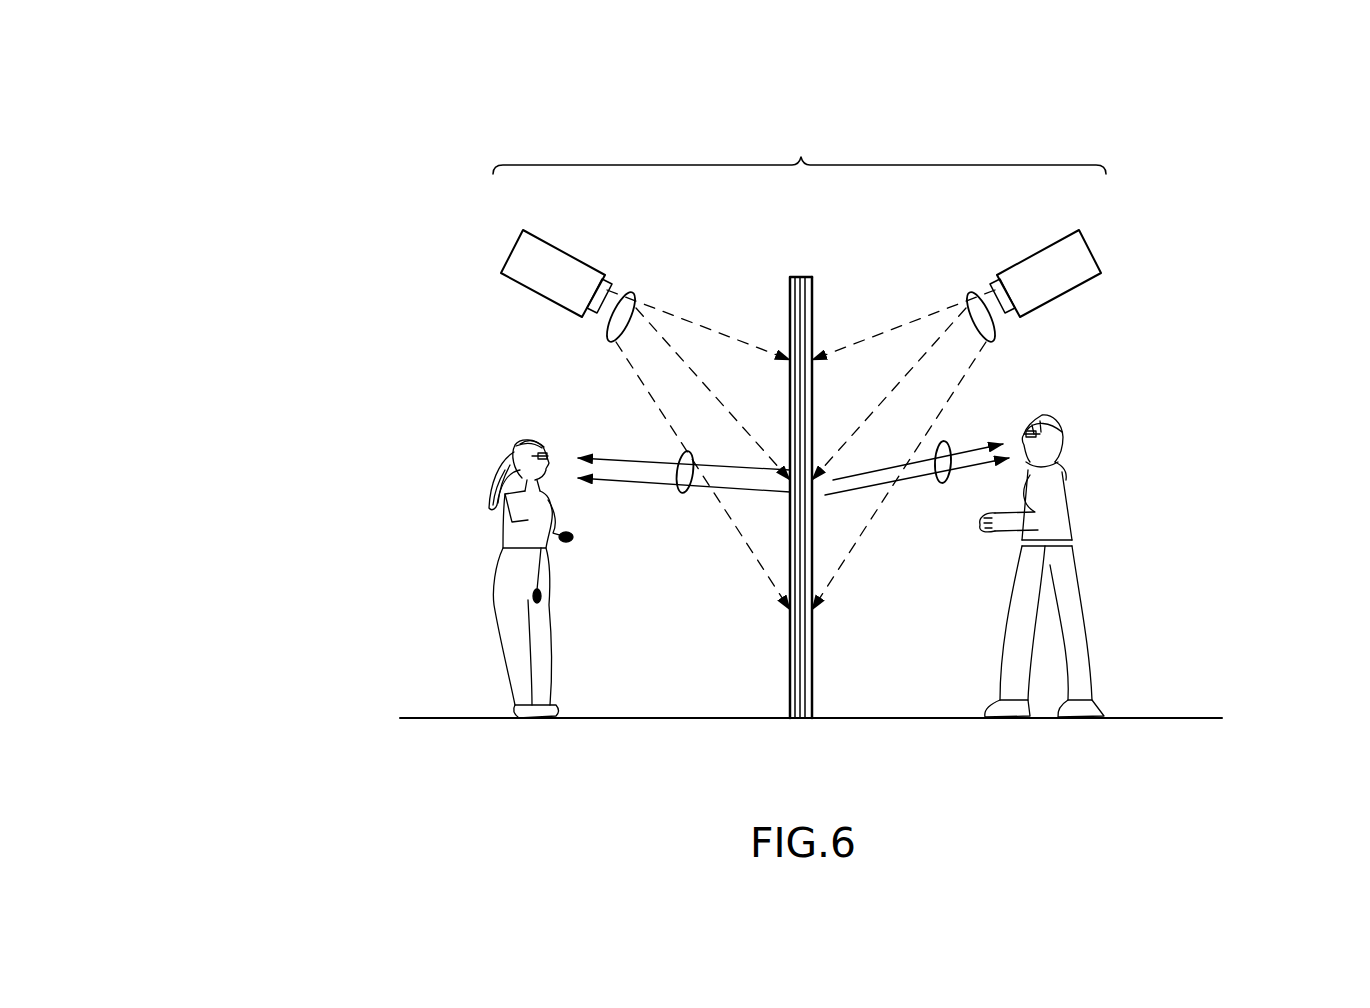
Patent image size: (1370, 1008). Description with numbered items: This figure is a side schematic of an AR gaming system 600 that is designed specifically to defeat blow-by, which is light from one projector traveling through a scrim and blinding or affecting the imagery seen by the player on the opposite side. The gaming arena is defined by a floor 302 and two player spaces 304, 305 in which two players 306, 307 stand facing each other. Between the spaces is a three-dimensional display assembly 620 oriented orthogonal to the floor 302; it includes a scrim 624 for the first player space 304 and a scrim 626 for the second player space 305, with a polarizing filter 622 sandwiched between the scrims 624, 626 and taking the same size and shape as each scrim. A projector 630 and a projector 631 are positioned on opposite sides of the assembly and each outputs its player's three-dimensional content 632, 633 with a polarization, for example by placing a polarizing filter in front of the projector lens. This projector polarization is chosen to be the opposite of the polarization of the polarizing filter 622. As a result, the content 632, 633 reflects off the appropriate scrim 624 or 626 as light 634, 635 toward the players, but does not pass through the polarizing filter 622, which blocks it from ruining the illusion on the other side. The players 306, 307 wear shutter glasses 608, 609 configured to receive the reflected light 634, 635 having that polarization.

The AR gaming system 600 is at (240, 112).
The 3D display assembly 620 is at (799, 153).
The polarizing filter 622 is at (801, 722).
The scrim 624 is at (809, 276).
The scrim 626 is at (793, 276).
The 3D projector 630 is at (1095, 230).
The 3D projector 631 is at (508, 232).
The 3D content 632 is at (975, 300).
The 3D content 633 is at (611, 330).
The light 634 is at (945, 484).
The light 635 is at (683, 494).
The shutter glasses 608 is at (1029, 431).
The shutter glasses 609 is at (541, 456).
The player 306 is at (1075, 490).
The player 307 is at (500, 528).
The player space 304 is at (1229, 337).
The player space 305 is at (419, 352).
The floor 302 is at (1140, 722).